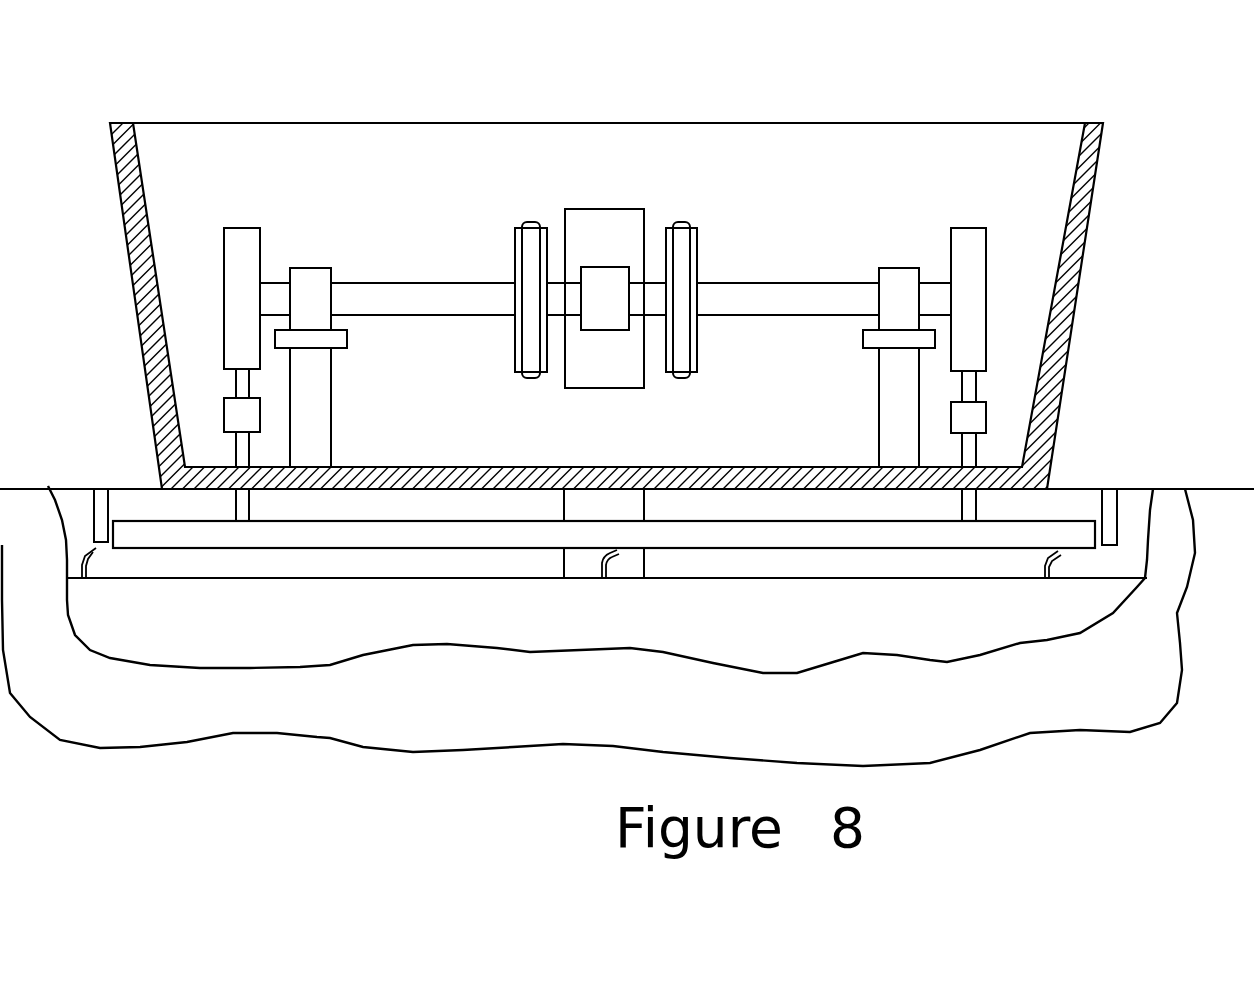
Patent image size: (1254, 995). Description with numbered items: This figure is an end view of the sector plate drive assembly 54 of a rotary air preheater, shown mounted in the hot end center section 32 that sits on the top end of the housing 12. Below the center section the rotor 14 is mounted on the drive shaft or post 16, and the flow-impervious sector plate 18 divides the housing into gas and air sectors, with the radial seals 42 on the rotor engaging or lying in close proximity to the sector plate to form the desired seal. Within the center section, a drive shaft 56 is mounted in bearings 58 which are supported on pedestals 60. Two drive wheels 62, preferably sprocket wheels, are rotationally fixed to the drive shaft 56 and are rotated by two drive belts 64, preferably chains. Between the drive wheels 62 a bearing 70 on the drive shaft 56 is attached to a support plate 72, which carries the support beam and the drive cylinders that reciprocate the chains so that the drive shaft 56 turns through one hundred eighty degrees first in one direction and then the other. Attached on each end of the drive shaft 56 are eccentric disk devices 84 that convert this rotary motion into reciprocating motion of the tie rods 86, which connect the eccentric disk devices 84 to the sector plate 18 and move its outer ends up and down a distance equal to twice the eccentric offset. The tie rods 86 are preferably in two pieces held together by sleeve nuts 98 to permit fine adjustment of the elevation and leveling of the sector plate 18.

The housing 12 is at (1180, 616).
The rotor 14 is at (667, 636).
The drive shaft or post 16 is at (562, 562).
The sector plate 18 is at (900, 537).
The hot end center section 32 is at (1087, 245).
The radial seals 42 is at (85, 558).
The drive assembly 54 is at (808, 160).
The drive shaft 56 is at (710, 316).
The bearings 58 is at (312, 267).
The pedestals 60 is at (331, 407).
The drive wheels 62 is at (514, 266).
The drive belts 64 is at (530, 222).
The bearing 70 is at (600, 330).
The support plate 72 is at (602, 228).
The eccentric disk devices 84 is at (240, 227).
The tie rods 86 is at (250, 388).
The sleeve nuts 98 is at (250, 413).